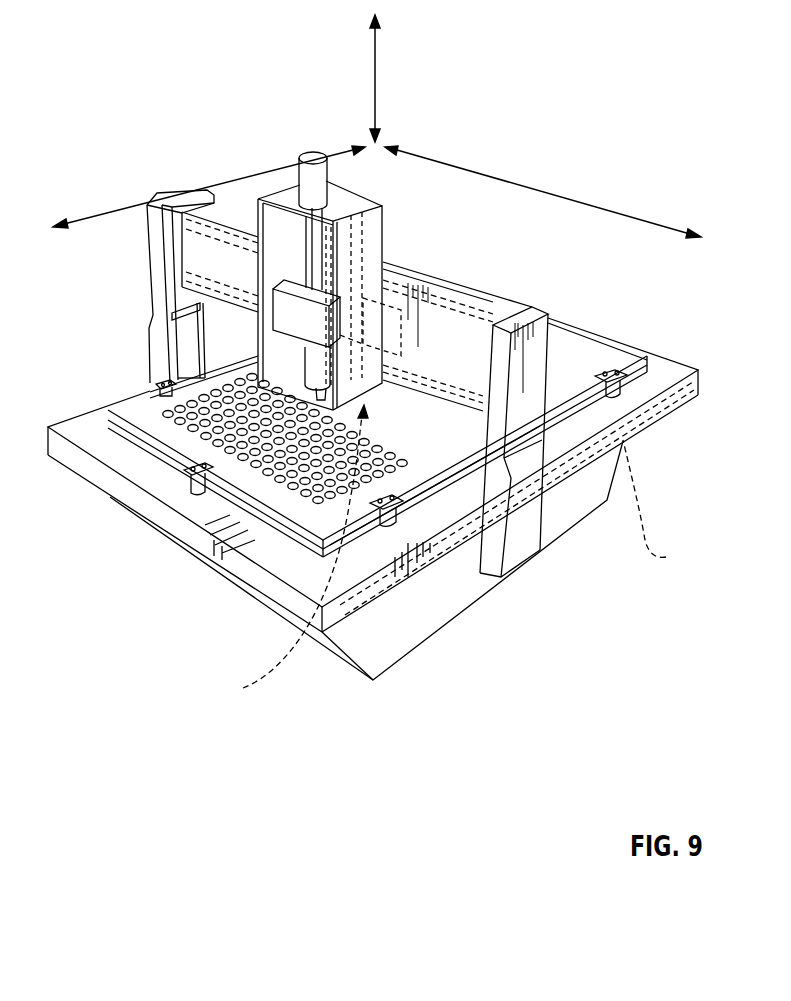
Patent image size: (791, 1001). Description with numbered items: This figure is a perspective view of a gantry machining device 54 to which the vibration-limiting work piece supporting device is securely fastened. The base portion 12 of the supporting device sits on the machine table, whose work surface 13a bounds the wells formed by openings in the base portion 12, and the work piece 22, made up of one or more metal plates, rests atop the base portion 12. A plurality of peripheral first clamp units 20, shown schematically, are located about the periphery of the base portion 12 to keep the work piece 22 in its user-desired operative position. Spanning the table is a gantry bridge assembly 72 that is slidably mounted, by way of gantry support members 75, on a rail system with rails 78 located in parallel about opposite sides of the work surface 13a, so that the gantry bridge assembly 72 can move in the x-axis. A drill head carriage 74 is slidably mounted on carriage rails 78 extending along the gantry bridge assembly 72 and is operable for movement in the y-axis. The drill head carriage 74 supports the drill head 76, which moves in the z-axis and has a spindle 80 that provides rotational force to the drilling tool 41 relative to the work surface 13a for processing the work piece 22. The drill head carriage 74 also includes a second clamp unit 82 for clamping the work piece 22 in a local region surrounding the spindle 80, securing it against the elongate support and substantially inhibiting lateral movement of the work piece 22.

The gantry machining device 54 is at (374, 358).
The base portion 12 is at (140, 440).
The work surface 13a is at (287, 564).
The peripheral first clamp units 20 is at (194, 484).
The work piece 22 is at (427, 487).
The drilling tool 41 is at (180, 376).
The gantry bridge assembly 72 is at (467, 264).
The drill head carriage 74 is at (240, 281).
The gantry support members 75 is at (523, 460).
The drill head 76 is at (291, 277).
The rails 78 is at (478, 307).
The spindle 80 is at (322, 363).
The second clamp unit 82 is at (289, 553).